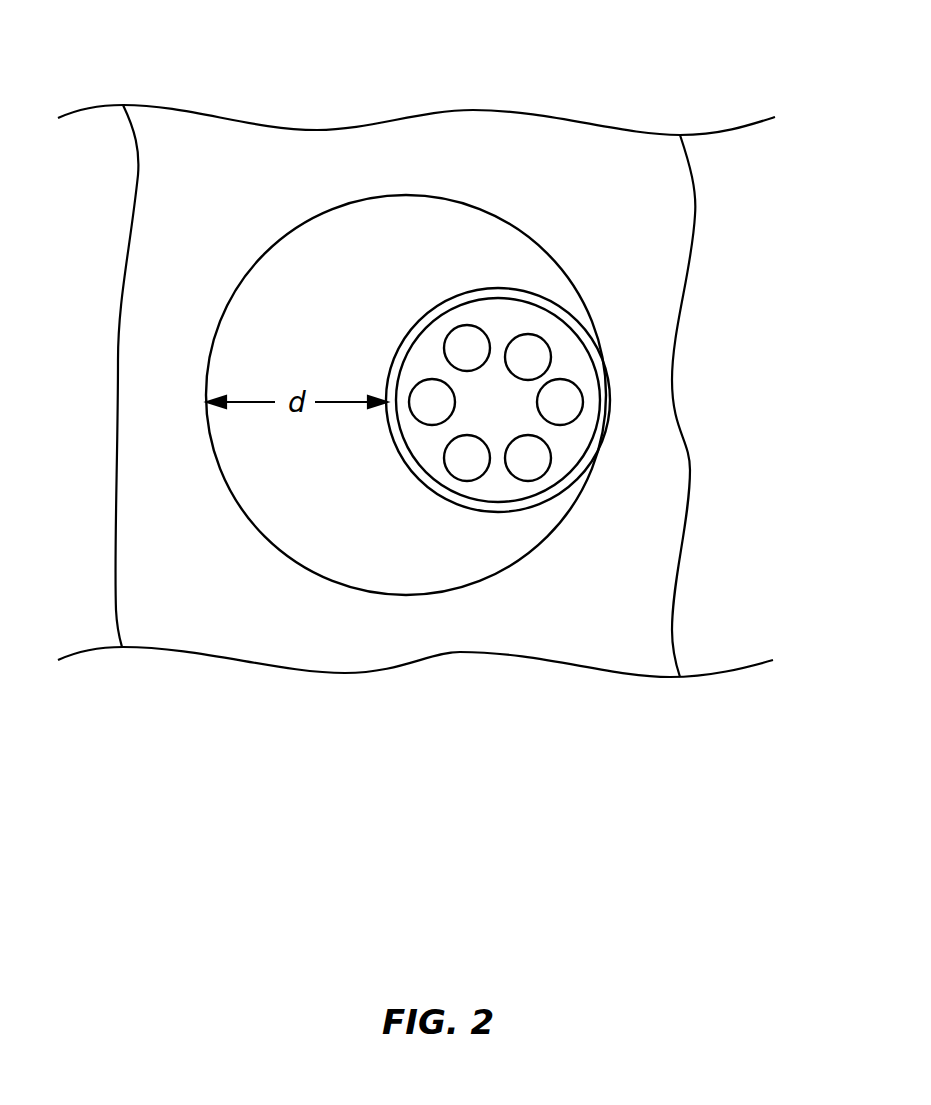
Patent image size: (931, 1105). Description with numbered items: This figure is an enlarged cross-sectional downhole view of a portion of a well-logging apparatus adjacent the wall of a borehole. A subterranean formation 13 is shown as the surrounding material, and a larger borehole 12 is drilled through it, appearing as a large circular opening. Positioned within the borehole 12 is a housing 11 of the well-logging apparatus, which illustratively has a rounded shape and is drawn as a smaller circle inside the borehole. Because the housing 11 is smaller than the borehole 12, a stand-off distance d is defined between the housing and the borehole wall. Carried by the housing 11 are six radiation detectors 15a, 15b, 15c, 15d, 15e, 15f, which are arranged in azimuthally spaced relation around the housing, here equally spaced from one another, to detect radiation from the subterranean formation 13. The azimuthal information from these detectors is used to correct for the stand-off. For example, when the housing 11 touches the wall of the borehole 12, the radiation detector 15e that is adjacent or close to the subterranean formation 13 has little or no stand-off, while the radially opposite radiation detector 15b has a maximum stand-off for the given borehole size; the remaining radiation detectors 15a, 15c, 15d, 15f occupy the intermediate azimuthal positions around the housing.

The housing 11 is at (500, 512).
The borehole 12 is at (387, 240).
The subterranean formation 13 is at (285, 150).
The radiation detector 15a is at (487, 340).
The radiation detector 15b is at (433, 380).
The radiation detector 15c is at (485, 475).
The radiation detector 15d is at (550, 455).
The radiation detector 15e is at (582, 395).
The radiation detector 15f is at (550, 348).